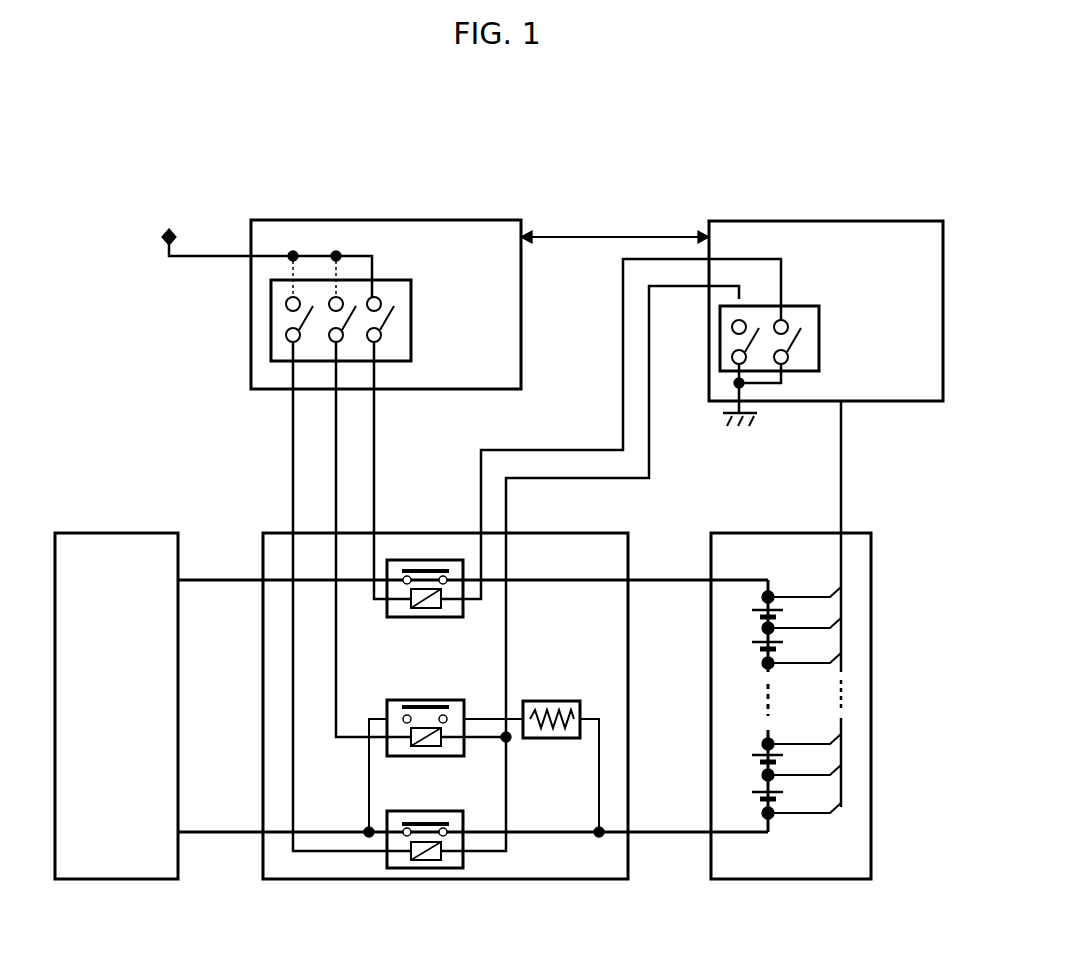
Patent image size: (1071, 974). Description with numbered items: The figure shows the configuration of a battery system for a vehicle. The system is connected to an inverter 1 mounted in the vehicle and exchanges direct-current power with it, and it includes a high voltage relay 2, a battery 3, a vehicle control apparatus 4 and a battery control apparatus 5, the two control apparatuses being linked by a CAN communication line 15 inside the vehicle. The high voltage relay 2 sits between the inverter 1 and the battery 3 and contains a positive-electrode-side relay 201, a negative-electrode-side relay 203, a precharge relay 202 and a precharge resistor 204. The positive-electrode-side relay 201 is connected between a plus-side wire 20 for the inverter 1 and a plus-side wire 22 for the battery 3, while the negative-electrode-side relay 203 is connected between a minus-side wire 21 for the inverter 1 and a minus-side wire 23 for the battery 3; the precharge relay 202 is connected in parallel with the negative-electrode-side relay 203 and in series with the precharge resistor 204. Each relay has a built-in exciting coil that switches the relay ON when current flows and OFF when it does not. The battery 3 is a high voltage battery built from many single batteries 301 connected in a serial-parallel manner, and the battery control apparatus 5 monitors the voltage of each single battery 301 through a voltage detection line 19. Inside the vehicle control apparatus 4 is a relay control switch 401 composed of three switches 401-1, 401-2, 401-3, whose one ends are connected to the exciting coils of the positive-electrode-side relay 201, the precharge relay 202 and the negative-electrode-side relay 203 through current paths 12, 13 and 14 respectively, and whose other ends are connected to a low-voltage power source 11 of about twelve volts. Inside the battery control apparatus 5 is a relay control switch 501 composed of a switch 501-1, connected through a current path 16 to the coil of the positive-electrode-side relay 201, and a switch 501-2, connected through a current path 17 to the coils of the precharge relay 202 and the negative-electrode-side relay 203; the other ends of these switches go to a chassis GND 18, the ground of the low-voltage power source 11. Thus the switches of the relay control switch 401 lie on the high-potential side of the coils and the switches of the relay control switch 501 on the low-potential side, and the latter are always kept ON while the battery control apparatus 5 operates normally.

The inverter 1 is at (138, 882).
The high voltage relay 2 is at (330, 882).
The battery 3 is at (803, 880).
The vehicle control apparatus 4 is at (503, 220).
The battery control apparatus 5 is at (898, 221).
The low-voltage power source 11 is at (160, 243).
The current path 12 is at (374, 445).
The current path 13 is at (335, 432).
The current path 14 is at (293, 403).
The CAN communication line 15 is at (600, 237).
The current path 16 is at (623, 352).
The current path 17 is at (649, 390).
The chassis GND 18 is at (722, 418).
The voltage detection line 19 is at (841, 485).
The plus-side wire 20 is at (243, 582).
The minus-side wire 21 is at (243, 834).
The plus-side wire 22 is at (700, 585).
The minus-side wire 23 is at (705, 838).
The positive-electrode-side relay 201 is at (450, 618).
The precharge relay 202 is at (398, 757).
The negative-electrode-side relay 203 is at (445, 870).
The precharge resistor 204 is at (566, 742).
The single battery 301 is at (745, 652).
The relay control switch 401 is at (364, 294).
The switch 401-1 is at (388, 312).
The switch 401-2 is at (366, 301).
The switch 401-3 is at (287, 305).
The relay control switch 501 is at (827, 325).
The switch 501-1 is at (796, 325).
The switch 501-2 is at (755, 315).